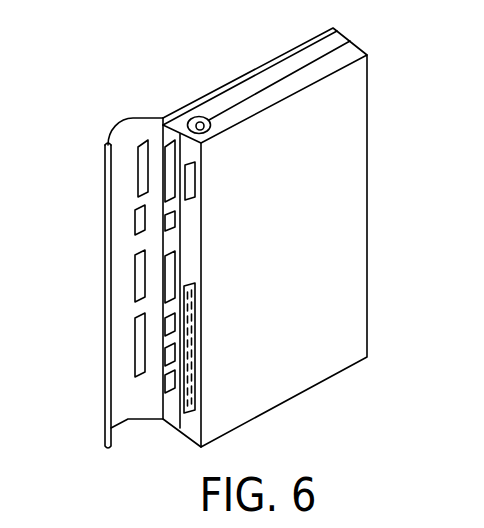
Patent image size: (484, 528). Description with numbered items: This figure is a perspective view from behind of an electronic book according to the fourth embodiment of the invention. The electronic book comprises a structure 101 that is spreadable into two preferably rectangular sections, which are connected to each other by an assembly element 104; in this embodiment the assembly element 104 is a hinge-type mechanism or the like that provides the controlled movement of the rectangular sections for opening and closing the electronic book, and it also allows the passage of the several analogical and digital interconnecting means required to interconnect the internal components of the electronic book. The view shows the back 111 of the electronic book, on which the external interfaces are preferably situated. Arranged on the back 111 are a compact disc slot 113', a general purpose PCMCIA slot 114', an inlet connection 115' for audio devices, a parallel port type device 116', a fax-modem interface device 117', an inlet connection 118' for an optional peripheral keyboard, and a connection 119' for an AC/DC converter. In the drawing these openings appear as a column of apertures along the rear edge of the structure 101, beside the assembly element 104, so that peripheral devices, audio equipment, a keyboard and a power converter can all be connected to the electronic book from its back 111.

The structure 101 is at (347, 57).
The assembly element 104 is at (197, 116).
The back 111 is at (133, 118).
The compact disc slot 113' is at (222, 348).
The general purpose PCMCIA slot 114' is at (107, 156).
The inlet connection for audio devices 115' is at (107, 202).
The parallel port type device 116' is at (109, 277).
The fax-modem interface device 117' is at (107, 338).
The inlet connection for an optional peripheral keyboard 118' is at (107, 377).
The connection for an AC/DC converter 119' is at (170, 424).